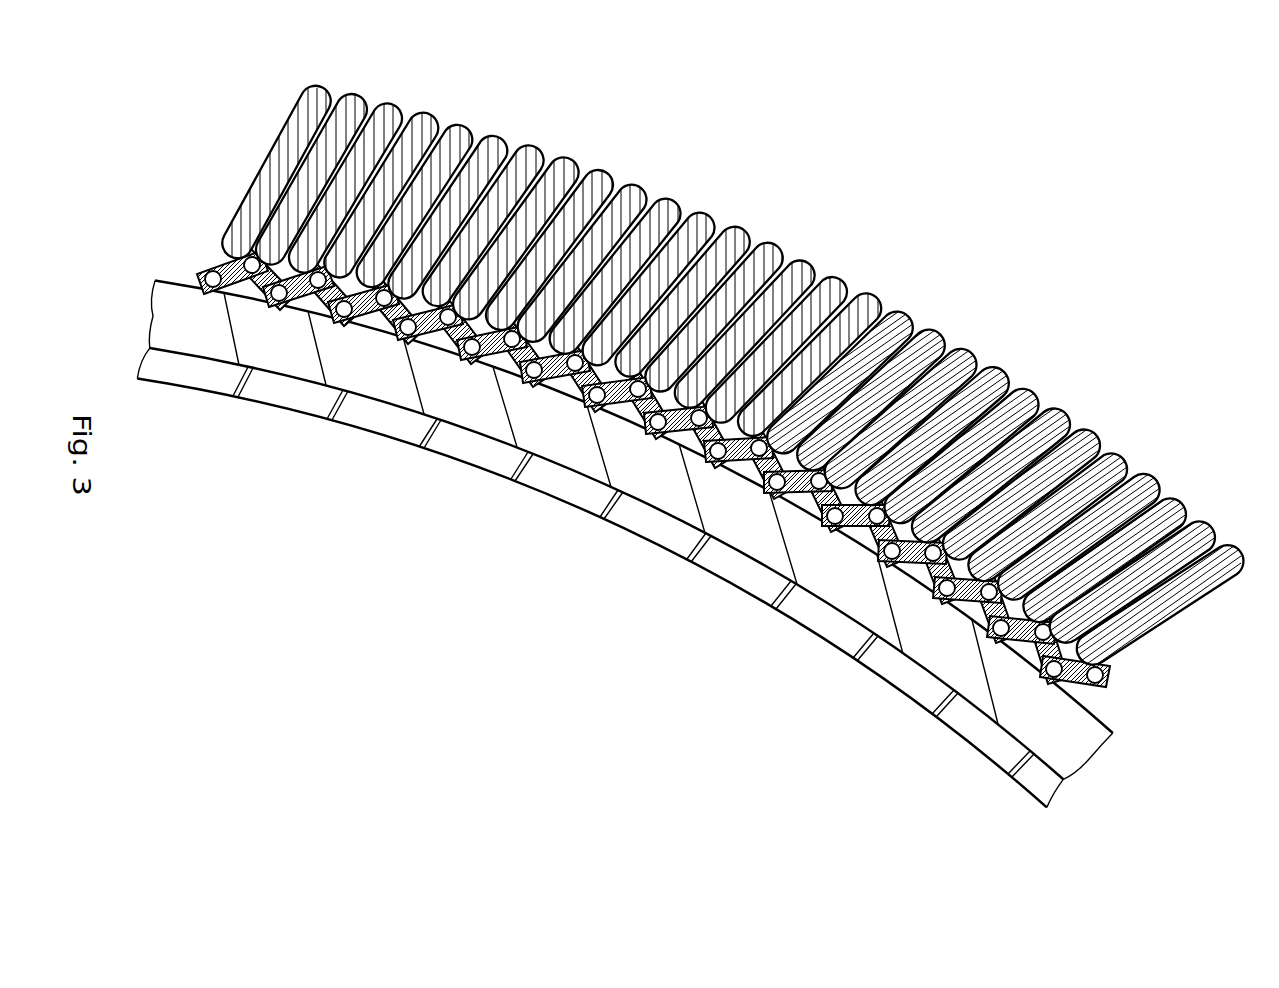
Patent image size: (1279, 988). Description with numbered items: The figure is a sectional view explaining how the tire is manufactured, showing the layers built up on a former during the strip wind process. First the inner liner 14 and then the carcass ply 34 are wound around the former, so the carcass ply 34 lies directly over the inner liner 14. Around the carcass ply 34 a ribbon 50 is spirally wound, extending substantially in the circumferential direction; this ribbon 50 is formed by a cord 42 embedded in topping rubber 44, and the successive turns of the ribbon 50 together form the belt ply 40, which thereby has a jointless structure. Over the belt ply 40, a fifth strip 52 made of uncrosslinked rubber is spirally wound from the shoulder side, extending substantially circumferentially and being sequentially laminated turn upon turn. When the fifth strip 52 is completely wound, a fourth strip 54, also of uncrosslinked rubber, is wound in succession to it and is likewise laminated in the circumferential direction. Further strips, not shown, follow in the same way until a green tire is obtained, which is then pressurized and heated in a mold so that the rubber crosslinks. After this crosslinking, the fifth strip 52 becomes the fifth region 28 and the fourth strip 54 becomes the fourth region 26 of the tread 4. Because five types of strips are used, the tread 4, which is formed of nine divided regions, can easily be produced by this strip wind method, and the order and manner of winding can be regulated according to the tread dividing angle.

The tread 4 is at (732, 348).
The inner liner 14 is at (555, 483).
The fourth region 26 is at (551, 234).
The fifth region 28 is at (1005, 445).
The carcass ply 34 is at (667, 493).
The belt ply 40 is at (681, 474).
The cord 42 is at (1108, 668).
The topping rubber 44 is at (1077, 686).
The ribbon 50 is at (437, 333).
The fifth strip 52 is at (978, 363).
The fourth strip 54 is at (509, 150).